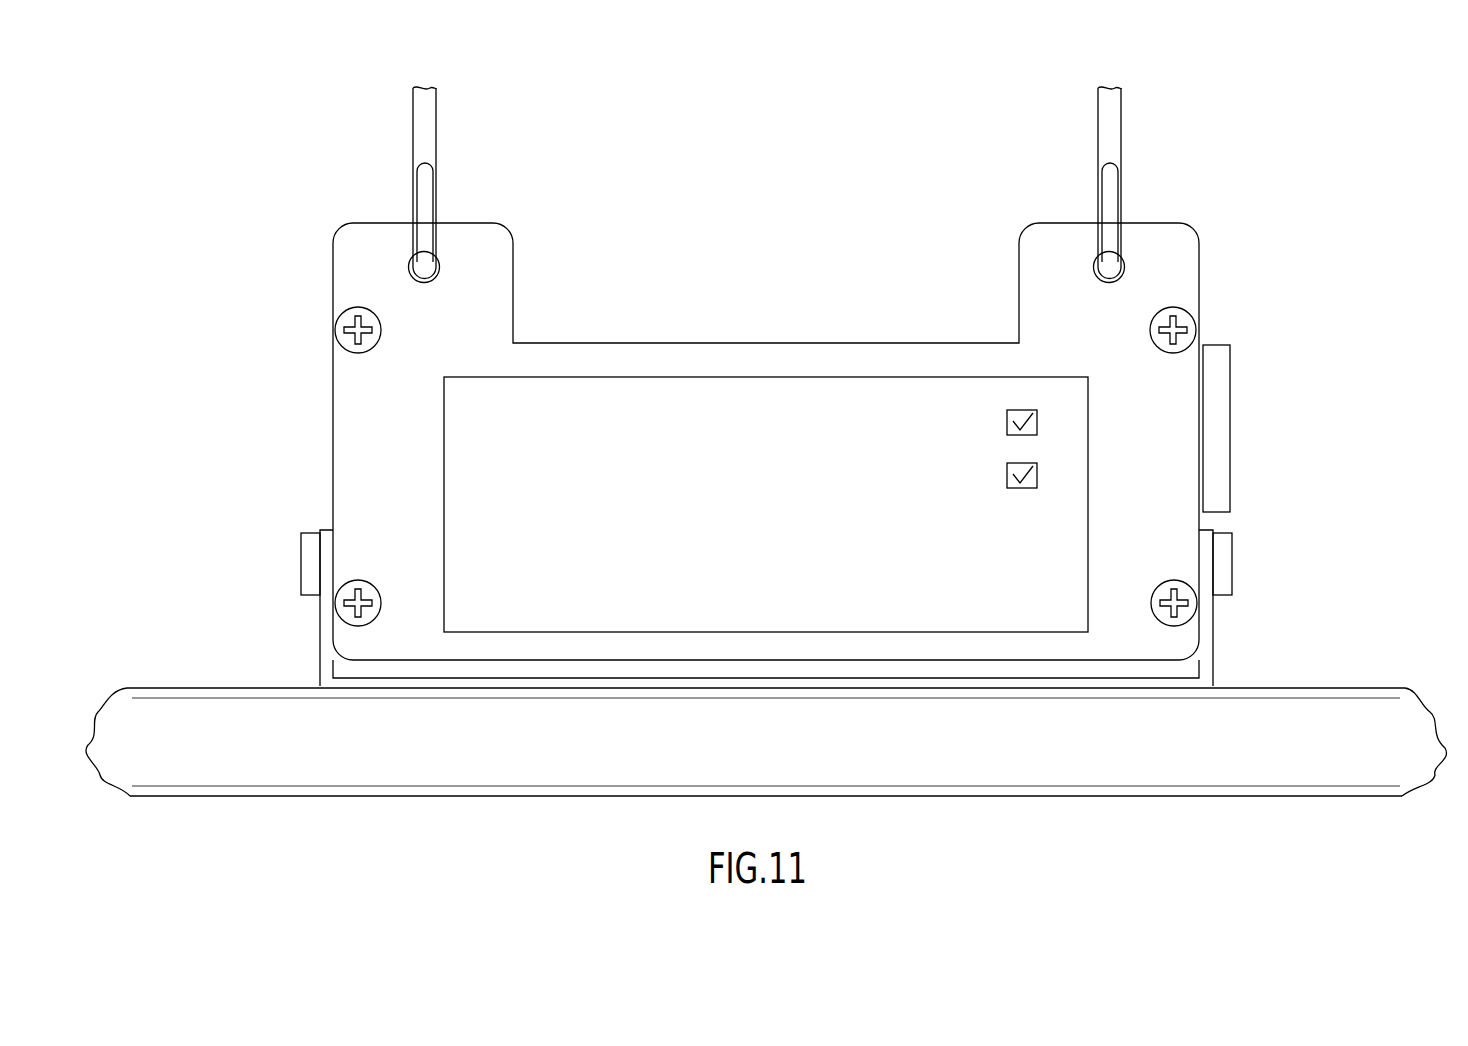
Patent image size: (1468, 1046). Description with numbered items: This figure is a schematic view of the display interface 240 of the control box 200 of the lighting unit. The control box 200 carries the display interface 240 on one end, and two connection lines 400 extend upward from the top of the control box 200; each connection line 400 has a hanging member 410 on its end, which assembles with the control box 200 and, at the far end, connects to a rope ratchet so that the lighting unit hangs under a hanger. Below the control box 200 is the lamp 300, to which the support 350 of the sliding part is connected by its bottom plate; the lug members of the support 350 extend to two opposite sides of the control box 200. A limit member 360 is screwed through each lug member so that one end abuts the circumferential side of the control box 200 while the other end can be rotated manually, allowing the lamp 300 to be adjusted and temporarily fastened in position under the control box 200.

The control box 200 is at (1225, 309).
The display interface 240 is at (488, 377).
The lamp 300 is at (1322, 684).
The support 350 is at (1219, 643).
The limit member 360 is at (305, 558).
The connection line 400 is at (763, 159).
The hanging member 410 is at (407, 155).